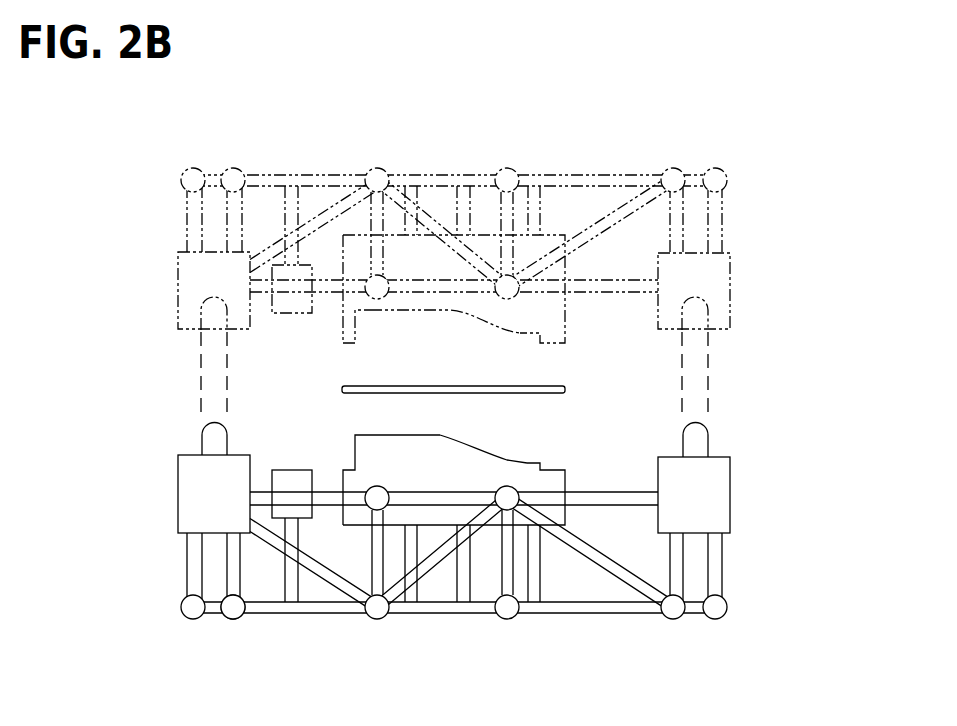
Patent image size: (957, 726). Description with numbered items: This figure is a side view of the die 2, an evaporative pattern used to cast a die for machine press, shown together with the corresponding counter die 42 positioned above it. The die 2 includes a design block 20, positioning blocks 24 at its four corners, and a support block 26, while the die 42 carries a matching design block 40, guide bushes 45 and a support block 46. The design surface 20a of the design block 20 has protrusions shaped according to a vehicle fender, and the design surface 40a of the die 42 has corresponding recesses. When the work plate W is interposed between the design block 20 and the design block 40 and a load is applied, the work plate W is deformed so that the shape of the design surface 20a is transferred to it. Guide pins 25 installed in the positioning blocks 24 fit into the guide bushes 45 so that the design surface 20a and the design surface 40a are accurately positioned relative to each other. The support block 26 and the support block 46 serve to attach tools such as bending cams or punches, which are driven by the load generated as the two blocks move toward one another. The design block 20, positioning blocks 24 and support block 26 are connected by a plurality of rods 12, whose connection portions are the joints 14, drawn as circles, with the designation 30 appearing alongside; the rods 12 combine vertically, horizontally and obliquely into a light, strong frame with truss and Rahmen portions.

The die 2 is at (128, 453).
The rod 12 is at (590, 550).
The joint 14 is at (233, 604).
The support block 30 is at (233, 607).
The design block 20 is at (490, 468).
The design surface 20a is at (494, 438).
The positioning block 24 is at (713, 498).
The guide pin 25 is at (695, 438).
The support block 26 is at (293, 470).
The design block 40 is at (490, 306).
The design surface 40a is at (390, 313).
The die 42 is at (592, 175).
The guide bush 45 is at (693, 320).
The support block 46 is at (293, 316).
The work plate W is at (567, 389).